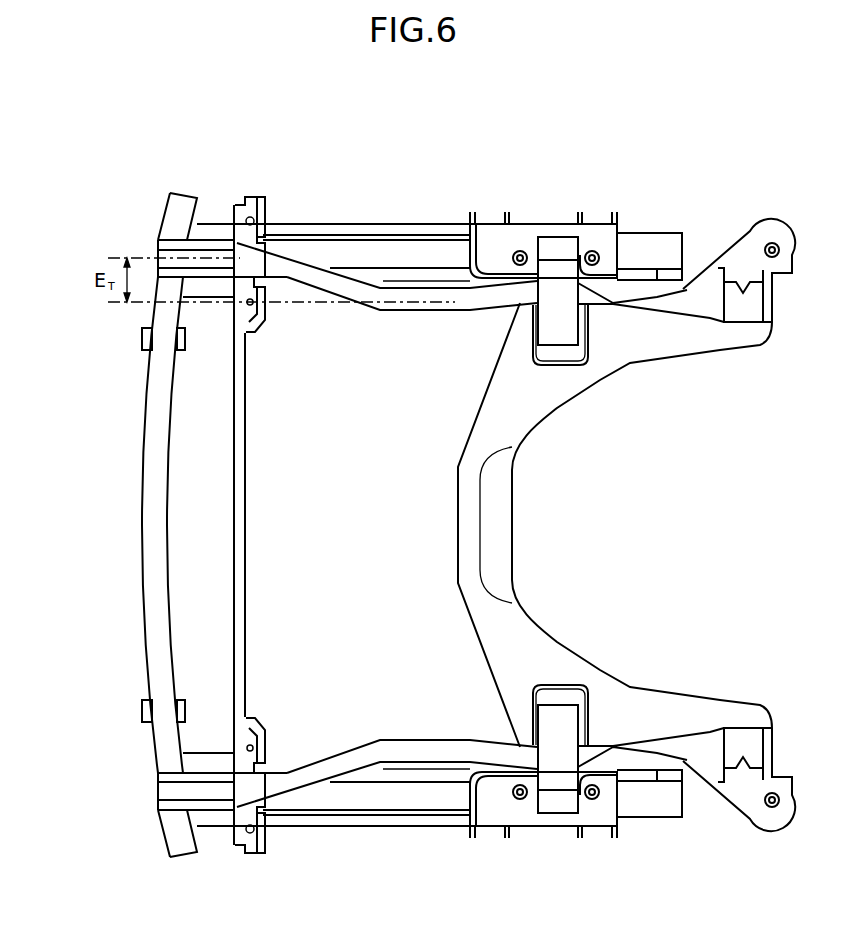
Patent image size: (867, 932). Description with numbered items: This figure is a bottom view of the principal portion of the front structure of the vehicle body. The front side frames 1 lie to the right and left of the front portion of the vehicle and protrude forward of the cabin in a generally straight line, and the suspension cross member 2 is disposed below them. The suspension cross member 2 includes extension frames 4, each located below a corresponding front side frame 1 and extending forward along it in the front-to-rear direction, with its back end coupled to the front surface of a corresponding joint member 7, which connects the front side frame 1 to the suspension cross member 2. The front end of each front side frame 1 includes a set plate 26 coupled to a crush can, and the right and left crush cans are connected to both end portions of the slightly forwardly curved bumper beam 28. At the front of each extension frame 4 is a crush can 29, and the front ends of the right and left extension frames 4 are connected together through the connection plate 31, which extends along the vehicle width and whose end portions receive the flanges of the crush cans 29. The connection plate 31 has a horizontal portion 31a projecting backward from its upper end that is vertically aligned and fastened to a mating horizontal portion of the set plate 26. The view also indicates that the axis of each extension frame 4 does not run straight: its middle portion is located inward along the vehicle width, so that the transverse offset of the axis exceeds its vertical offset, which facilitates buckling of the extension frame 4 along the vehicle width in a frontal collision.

The front side frames 1 is at (386, 223).
The suspension cross member 2 is at (462, 491).
The extension frames 4 is at (421, 312).
The joint member 7 is at (571, 323).
The set plate 26 is at (268, 210).
The bumper beam 28 is at (142, 480).
The crush can 29 is at (173, 243).
The connection plate 31 is at (246, 478).
The horizontal portion 31a is at (242, 203).